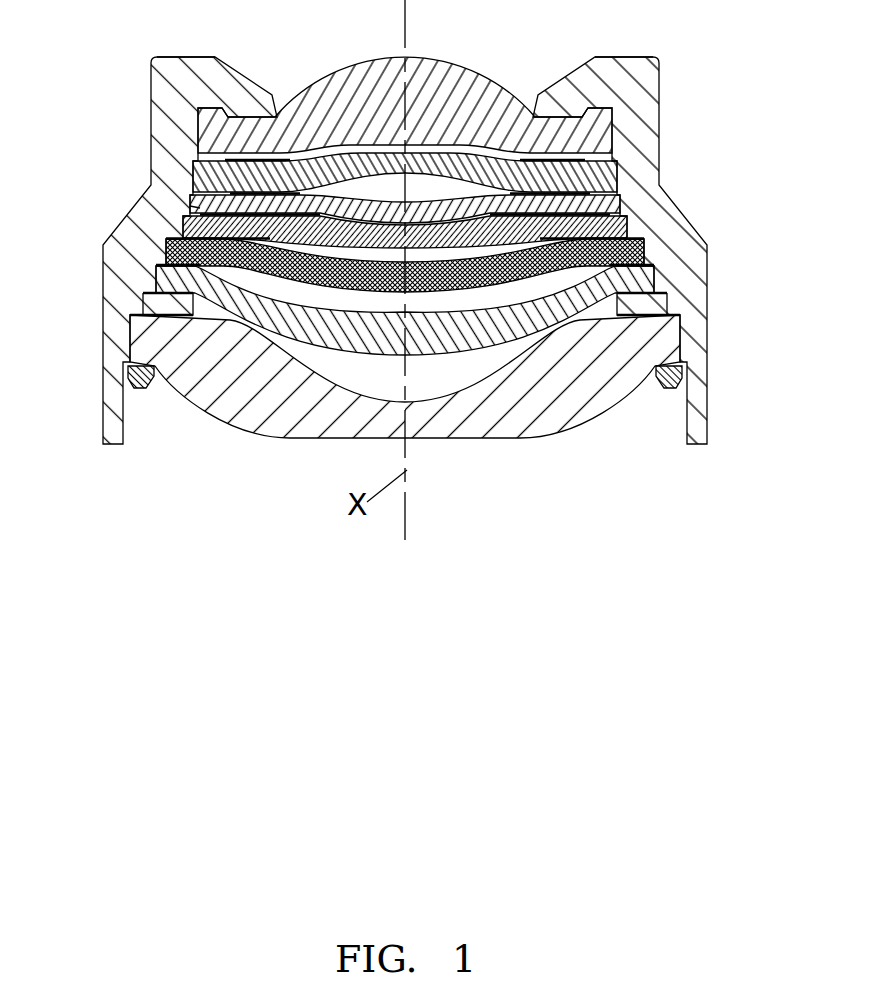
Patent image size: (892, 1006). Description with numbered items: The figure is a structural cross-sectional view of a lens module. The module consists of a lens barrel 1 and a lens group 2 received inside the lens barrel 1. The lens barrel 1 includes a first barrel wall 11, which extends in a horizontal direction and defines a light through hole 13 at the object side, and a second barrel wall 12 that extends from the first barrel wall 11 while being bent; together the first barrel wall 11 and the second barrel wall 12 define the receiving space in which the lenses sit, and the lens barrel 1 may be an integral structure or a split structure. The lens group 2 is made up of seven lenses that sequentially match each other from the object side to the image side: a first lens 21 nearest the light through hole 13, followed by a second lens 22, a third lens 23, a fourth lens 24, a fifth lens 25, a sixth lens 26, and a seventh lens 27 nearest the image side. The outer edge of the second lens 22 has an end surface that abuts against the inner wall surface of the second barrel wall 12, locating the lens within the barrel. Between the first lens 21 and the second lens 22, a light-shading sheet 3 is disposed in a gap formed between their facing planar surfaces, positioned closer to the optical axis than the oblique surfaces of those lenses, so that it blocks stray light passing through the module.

The lens barrel 1 is at (380, 242).
The first barrel wall 11 is at (210, 80).
The second barrel wall 12 is at (167, 172).
The light through hole 13 is at (318, 46).
The lens group 2 is at (464, 247).
The first lens 21 is at (584, 127).
The second lens 22 is at (586, 176).
The third lens 23 is at (600, 207).
The fourth lens 24 is at (615, 228).
The fifth lens 25 is at (645, 256).
The sixth lens 26 is at (625, 283).
The seventh lens 27 is at (441, 376).
The light-shading sheet 3 is at (198, 207).